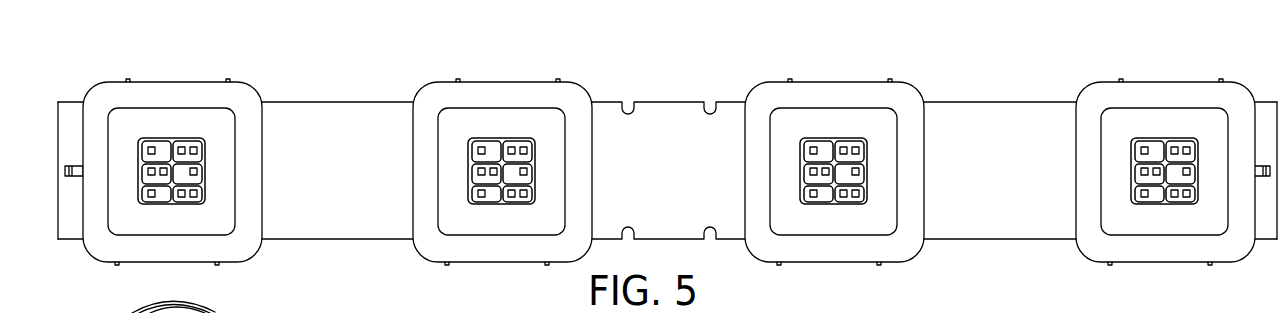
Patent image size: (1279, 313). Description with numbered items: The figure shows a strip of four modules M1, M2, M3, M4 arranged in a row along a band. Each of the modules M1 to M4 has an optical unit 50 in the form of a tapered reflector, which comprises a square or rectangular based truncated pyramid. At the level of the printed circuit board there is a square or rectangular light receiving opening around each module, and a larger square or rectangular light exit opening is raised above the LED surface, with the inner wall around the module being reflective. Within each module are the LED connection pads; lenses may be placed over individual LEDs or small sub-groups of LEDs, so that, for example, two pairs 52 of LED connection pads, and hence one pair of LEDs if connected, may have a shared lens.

The optical unit 50 is at (262, 127).
The pairs of LED connection pads 52 is at (200, 169).
The module M1 is at (199, 149).
The module M2 is at (502, 149).
The module M3 is at (834, 149).
The module M4 is at (1165, 149).